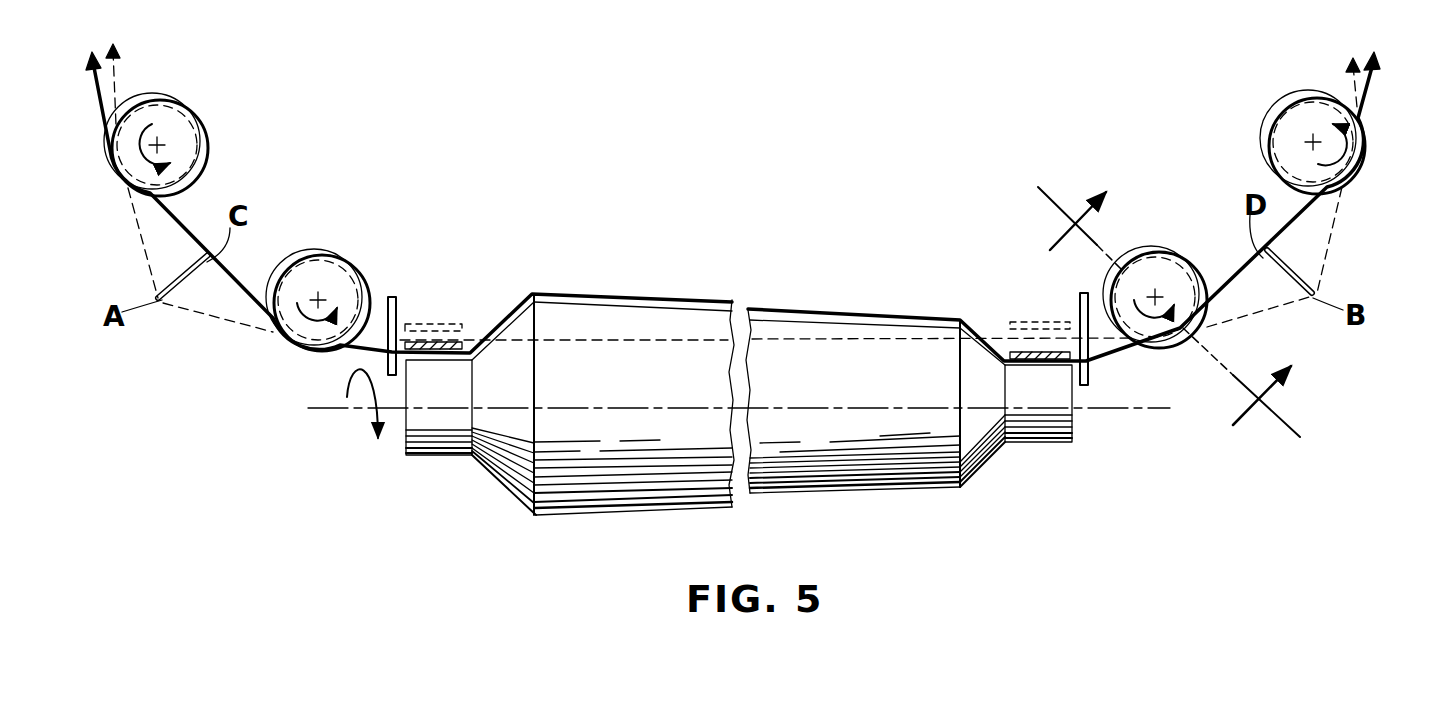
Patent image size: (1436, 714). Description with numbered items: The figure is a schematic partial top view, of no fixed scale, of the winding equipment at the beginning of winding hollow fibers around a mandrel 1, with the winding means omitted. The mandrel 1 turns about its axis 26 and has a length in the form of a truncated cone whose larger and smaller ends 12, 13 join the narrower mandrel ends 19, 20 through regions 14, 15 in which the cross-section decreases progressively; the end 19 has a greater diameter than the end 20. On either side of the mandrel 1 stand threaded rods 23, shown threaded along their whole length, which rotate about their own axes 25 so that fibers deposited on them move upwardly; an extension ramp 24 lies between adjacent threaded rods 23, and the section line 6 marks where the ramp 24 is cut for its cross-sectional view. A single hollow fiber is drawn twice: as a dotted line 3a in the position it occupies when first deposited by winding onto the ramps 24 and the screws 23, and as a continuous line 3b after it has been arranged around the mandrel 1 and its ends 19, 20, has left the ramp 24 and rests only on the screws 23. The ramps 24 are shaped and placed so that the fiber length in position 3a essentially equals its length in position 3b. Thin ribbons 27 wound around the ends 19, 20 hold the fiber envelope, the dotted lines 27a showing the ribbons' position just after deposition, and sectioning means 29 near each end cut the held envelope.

The mandrel 1 is at (845, 478).
The fiber in initial position 3a is at (128, 230).
The fiber in final position 3b is at (225, 280).
The section line 6— 6 is at (1168, 319).
The end of truncated-cone part 12 is at (532, 293).
The end of truncated-cone part 13 is at (968, 330).
The transition region 14 is at (505, 475).
The transition region 15 is at (980, 466).
The mandrel end 19 is at (437, 452).
The mandrel end 20 is at (1038, 442).
The threaded rod 23 is at (205, 150).
The extension ramp 24 is at (177, 272).
The axis of threaded rod 25 is at (162, 142).
The mandrel axis 26 is at (345, 410).
The ribbon 27 is at (445, 342).
The ribbon initial position 27a is at (428, 324).
The sectioning means 29 is at (391, 296).